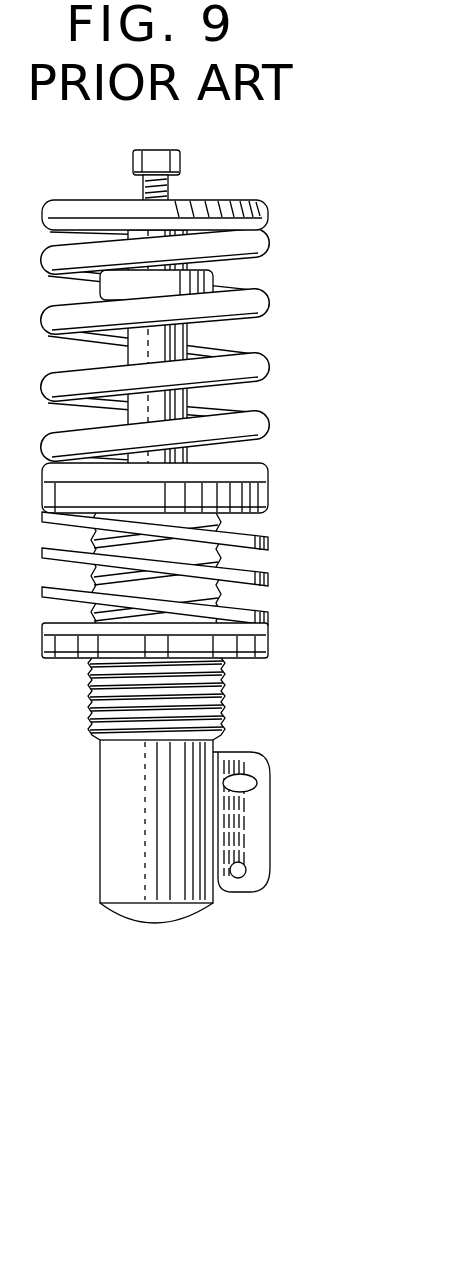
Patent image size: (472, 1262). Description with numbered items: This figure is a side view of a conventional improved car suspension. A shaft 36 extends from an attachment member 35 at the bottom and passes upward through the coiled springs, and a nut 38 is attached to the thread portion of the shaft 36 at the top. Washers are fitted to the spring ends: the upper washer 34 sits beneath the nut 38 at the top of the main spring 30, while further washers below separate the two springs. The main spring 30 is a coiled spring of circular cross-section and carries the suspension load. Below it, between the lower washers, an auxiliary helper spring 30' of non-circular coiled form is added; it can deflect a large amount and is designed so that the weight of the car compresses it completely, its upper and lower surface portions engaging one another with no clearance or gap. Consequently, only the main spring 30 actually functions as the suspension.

The main spring 30 is at (213, 350).
The helper spring 30' is at (213, 568).
The washer 34 is at (267, 222).
The attachment member 35 is at (118, 798).
The shaft 36 is at (142, 192).
The nut 38 is at (163, 150).